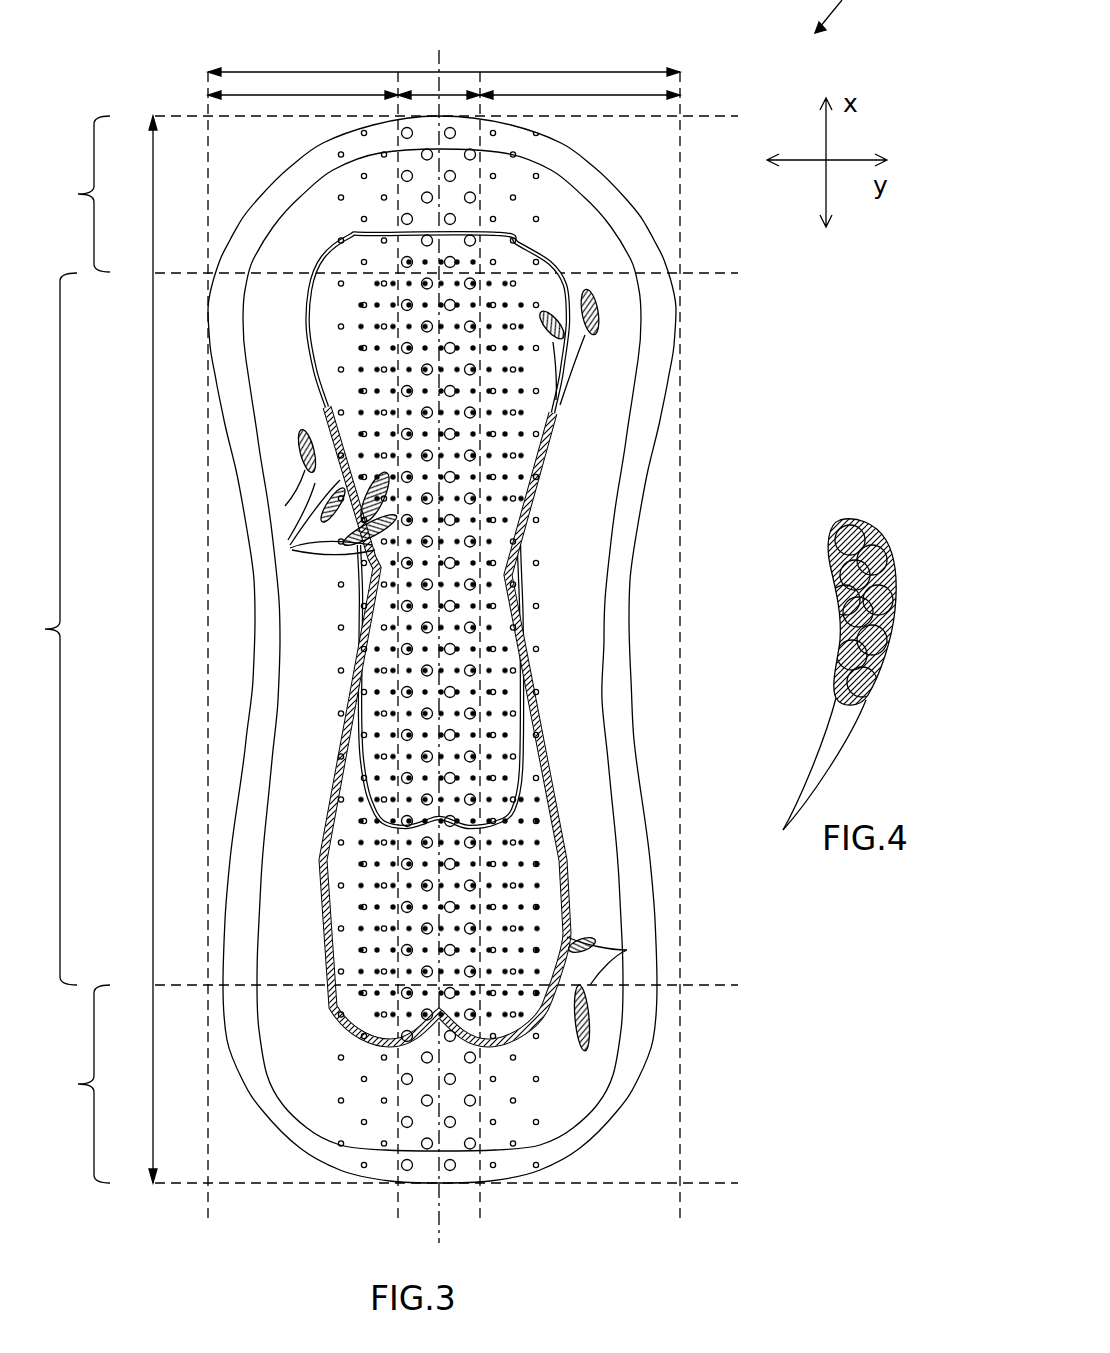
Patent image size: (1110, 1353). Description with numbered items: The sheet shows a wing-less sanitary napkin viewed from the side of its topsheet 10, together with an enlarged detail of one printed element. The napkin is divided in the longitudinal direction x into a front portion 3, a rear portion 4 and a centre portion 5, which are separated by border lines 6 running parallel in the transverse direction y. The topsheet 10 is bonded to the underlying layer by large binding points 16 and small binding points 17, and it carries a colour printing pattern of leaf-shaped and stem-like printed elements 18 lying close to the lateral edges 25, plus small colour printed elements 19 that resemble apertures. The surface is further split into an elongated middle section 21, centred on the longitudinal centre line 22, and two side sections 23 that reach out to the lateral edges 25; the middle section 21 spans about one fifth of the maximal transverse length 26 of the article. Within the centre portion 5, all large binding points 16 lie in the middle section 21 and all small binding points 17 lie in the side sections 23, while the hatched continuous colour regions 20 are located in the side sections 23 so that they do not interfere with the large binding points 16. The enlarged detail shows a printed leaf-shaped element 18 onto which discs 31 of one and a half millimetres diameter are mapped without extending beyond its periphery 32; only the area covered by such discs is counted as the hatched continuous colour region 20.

In FIG. 3, the front portion 3 is at (75, 194).
In FIG. 3, the rear portion 4 is at (75, 1084).
In FIG. 3, the centre portion 5 is at (44, 629).
In FIG. 3, the border lines 6 is at (704, 270).
In FIG. 3, the topsheet 10 is at (610, 415).
In FIG. 3, the large binding points 16 is at (456, 133).
In FIG. 3, the small binding points 17 is at (495, 177).
In FIG. 3, the printed leaf-shaped elements 18 is at (594, 298).
In FIG. 4, the printed leaf-shaped elements 18 is at (837, 720).
In FIG. 3, the small colour printed elements 19 is at (523, 305).
In FIG. 3, the continuous colour regions 20 is at (558, 328).
In FIG. 4, the continuous colour regions 20 is at (832, 548).
In FIG. 3, the middle section 21 is at (452, 95).
In FIG. 3, the longitudinal centre line 22 is at (439, 60).
In FIG. 3, the side sections 23 is at (325, 95).
In FIG. 3, the lateral edges 25 is at (215, 347).
In FIG. 3, the maximal length 26 is at (232, 72).
In FIG. 4, the fibers 31 is at (840, 617).
In FIG. 4, the periphery 32 is at (815, 755).